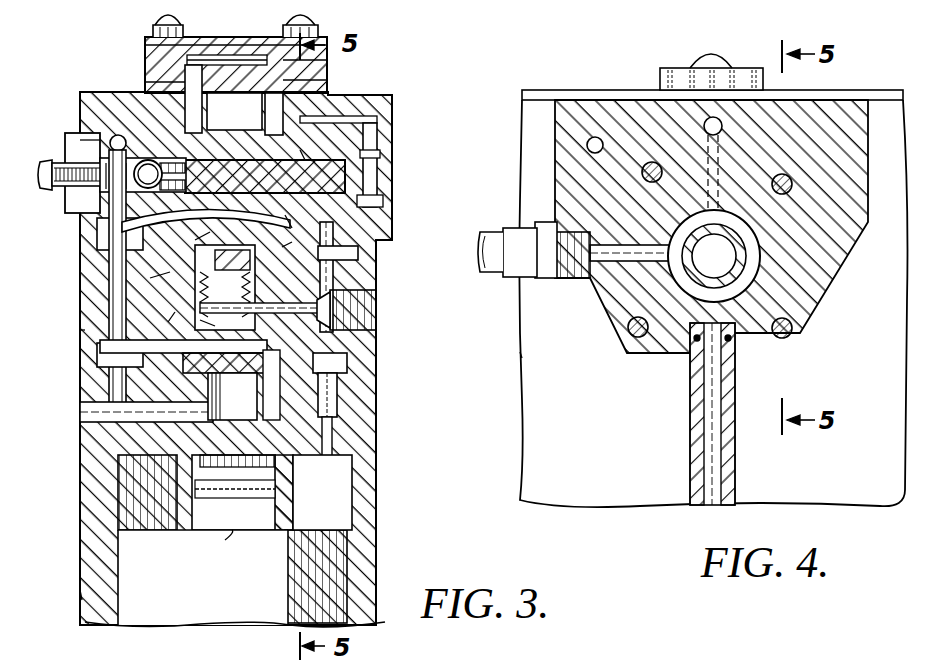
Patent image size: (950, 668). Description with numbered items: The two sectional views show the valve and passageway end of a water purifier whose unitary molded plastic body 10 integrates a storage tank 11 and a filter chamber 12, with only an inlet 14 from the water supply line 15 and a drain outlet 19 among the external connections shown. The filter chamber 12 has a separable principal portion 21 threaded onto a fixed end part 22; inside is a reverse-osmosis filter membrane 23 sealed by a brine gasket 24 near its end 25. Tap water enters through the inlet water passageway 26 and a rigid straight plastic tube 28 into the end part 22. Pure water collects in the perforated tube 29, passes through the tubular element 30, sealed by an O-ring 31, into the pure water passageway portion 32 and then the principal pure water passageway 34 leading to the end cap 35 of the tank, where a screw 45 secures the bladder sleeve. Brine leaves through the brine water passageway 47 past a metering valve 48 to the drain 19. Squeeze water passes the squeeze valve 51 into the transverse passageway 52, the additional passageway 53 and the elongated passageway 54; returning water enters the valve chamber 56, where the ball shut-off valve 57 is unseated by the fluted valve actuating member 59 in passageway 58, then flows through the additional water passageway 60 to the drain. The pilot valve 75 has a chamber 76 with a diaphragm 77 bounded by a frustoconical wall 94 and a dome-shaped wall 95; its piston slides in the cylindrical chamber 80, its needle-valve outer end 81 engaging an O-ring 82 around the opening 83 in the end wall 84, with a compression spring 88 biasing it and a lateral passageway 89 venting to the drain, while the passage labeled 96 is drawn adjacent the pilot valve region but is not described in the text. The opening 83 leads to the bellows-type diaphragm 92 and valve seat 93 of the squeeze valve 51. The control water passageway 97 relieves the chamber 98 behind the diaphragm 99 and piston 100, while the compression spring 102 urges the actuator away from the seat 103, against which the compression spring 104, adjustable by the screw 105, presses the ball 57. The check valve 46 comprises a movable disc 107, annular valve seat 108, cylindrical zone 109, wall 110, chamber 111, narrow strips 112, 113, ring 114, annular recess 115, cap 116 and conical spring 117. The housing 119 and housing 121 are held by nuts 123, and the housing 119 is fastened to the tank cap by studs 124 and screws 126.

In FIG. 4, the unitary molded plastic body 10 is at (548, 280).
In FIG. 4, the storage tank 11 is at (520, 416).
In FIG. 3, the filter chamber 12 is at (72, 556).
In FIG. 4, the inlet 14 is at (562, 280).
In FIG. 4, the water supply line 15 is at (492, 275).
In FIG. 3, the drain outlet 19 is at (376, 312).
In FIG. 4, the principal portion of filter chamber 21 is at (772, 238).
In FIG. 3, the end part of filter chamber 22 is at (80, 598).
In FIG. 3, the reverse-osmosis filter membrane 23 is at (190, 622).
In FIG. 3, the brine gasket 24 is at (347, 575).
In FIG. 3, the membrane end 25 is at (310, 530).
In FIG. 4, the inlet water passageway 26 is at (628, 238).
In FIG. 4, the rigid straight plastic tube 28 is at (735, 470).
In FIG. 3, the perforated tube 29 is at (238, 543).
In FIG. 3, the tubular element 30 is at (293, 480).
In FIG. 3, the O-ring 31 is at (238, 498).
In FIG. 4, the pure water passageway portion 32 is at (722, 158).
In FIG. 4, the principal pure water passageway 34 is at (722, 128).
In FIG. 4, the end cap portion of tank 35 is at (520, 355).
In FIG. 4, the screw 45 is at (726, 58).
In FIG. 3, the check valve 46 is at (145, 70).
In FIG. 3, the brine water passageway 47 is at (332, 438).
In FIG. 3, the metering valve 48 is at (337, 390).
In FIG. 3, the squeeze valve 51 is at (143, 355).
In FIG. 3, the transverse passageway 52 is at (160, 422).
In FIG. 3, the additional passageway 53 is at (109, 296).
In FIG. 3, the elongated passageway 54 is at (78, 138).
In FIG. 4, the elongated passageway 54 is at (598, 137).
In FIG. 3, the valve chamber 56 is at (97, 226).
In FIG. 3, the ball shut-off valve 57 is at (126, 140).
In FIG. 3, the passageway 58 is at (250, 158).
In FIG. 3, the fluted valve actuating member 59 is at (300, 146).
In FIG. 3, the additional water passageway 60 is at (358, 256).
In FIG. 3, the pilot valve 75 is at (154, 281).
In FIG. 3, the chamber 76 is at (193, 241).
In FIG. 3, the diaphragm 77 is at (293, 227).
In FIG. 3, the cylindrical chamber 80 is at (200, 262).
In FIG. 3, the outer end of piston 81 is at (205, 290).
In FIG. 3, the O-ring 82 is at (250, 340).
In FIG. 3, the opening 83 is at (195, 318).
In FIG. 3, the end wall 84 is at (225, 364).
In FIG. 3, the compression spring 88 is at (252, 262).
In FIG. 3, the lateral passageway 89 is at (320, 280).
In FIG. 3, the bellows-type diaphragm 92 is at (270, 330).
In FIG. 3, the valve seat 93 is at (232, 396).
In FIG. 3, the frustoconical wall 94 is at (290, 248).
In FIG. 3, the dome-shaped wall 95 is at (162, 322).
In FIG. 3, the curved passage 96 is at (190, 216).
In FIG. 3, the control water passageway 97 is at (377, 118).
In FIG. 3, the chamber 98 is at (380, 156).
In FIG. 3, the diaphragm 99 is at (383, 200).
In FIG. 3, the piston 100 is at (378, 236).
In FIG. 3, the compression spring 102 is at (205, 160).
In FIG. 3, the valve seat 103 is at (158, 164).
In FIG. 3, the compression spring 104 is at (125, 192).
In FIG. 3, the adjusting screw 105 is at (45, 160).
In FIG. 3, the movable disc 107 is at (236, 37).
In FIG. 3, the annular valve seat 108 is at (234, 111).
In FIG. 3, the cylindrical zone 109 is at (283, 110).
In FIG. 3, the wall 110 is at (187, 60).
In FIG. 3, the chamber 111 is at (200, 37).
In FIG. 3, the narrow strip 112 is at (145, 82).
In FIG. 3, the narrow strip 113 is at (327, 60).
In FIG. 3, the ring 114 is at (185, 112).
In FIG. 3, the annular recess 115 is at (327, 80).
In FIG. 3, the cap 116 is at (145, 45).
In FIG. 3, the conical spring 117 is at (262, 37).
In FIG. 3, the housing 119 is at (377, 140).
In FIG. 4, the housing 119 is at (555, 178).
In FIG. 3, the housing 121 is at (80, 330).
In FIG. 3, the nuts 123 is at (152, 22).
In FIG. 4, the studs 124 is at (655, 162).
In FIG. 4, the screws 126 is at (628, 332).